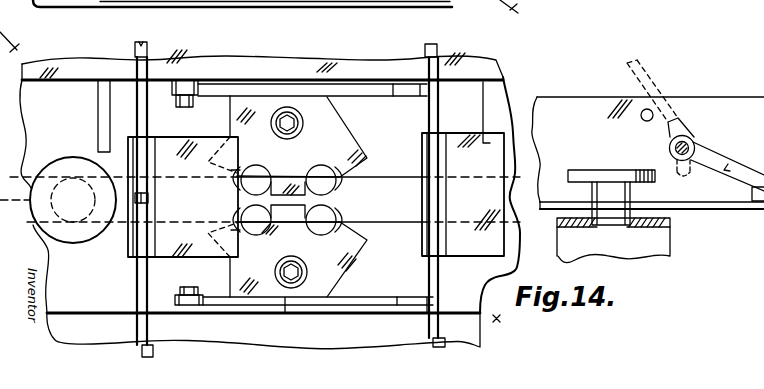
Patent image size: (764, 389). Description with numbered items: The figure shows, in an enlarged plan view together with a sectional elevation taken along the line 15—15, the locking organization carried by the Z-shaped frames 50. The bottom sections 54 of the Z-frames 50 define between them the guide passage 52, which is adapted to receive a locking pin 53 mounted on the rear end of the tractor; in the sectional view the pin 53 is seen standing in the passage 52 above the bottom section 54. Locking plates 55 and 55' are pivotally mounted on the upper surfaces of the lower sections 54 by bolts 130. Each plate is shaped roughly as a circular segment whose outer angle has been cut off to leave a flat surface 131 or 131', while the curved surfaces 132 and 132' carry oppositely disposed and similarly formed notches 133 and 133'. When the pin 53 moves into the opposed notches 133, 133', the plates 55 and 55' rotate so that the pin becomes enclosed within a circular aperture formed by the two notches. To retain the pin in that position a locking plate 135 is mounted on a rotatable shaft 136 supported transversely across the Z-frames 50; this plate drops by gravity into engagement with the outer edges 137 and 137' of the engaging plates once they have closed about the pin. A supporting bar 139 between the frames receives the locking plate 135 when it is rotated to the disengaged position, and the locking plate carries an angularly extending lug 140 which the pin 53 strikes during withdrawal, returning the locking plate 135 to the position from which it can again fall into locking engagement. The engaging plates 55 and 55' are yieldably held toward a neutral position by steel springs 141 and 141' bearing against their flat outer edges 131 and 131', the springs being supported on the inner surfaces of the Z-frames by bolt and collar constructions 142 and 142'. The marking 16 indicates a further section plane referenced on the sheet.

In FIG. 14, the Z-shaped frame 50 is at (500, 315).
In FIG. 15, the guide passage 52 is at (599, 240).
In FIG. 14, the locking pin 53 is at (58, 200).
In FIG. 15, the locking pin 53 is at (607, 170).
In FIG. 14, the bottom section 54 is at (414, 164).
In FIG. 15, the bottom section 54 is at (730, 197).
In FIG. 14, the locking plate 55 is at (323, 292).
In FIG. 14, the locking plate 55' is at (310, 105).
In FIG. 14, the bolt 130 is at (287, 131).
In FIG. 14, the flat surface 131 is at (300, 330).
In FIG. 14, the flat surface 131' is at (295, 65).
In FIG. 14, the curved surface 132 is at (288, 220).
In FIG. 14, the curved surface 132' is at (288, 180).
In FIG. 14, the notch 133 is at (219, 199).
In FIG. 14, the notch 133' is at (355, 199).
In FIG. 14, the locking plate 135 is at (186, 152).
In FIG. 15, the locking plate 135 is at (727, 171).
In FIG. 14, the rotatable shaft 136 is at (137, 44).
In FIG. 15, the rotatable shaft 136 is at (694, 146).
In FIG. 14, the outer edge 137 is at (230, 294).
In FIG. 14, the outer edge 137' is at (233, 103).
In FIG. 14, the supporting bar 139 is at (100, 107).
In FIG. 15, the supporting bar 139 is at (644, 110).
In FIG. 14, the angularly extending lug 140 is at (148, 199).
In FIG. 15, the angularly extending lug 140 is at (682, 120).
In FIG. 14, the steel spring 141 is at (408, 294).
In FIG. 14, the steel spring 141' is at (398, 101).
In FIG. 14, the bolt and collar construction 142 is at (150, 297).
In FIG. 14, the bolt and collar construction 142' is at (189, 69).
In FIG. 14, the section line 15 is at (16, 180).
In FIG. 15, the section line 16 is at (518, 12).